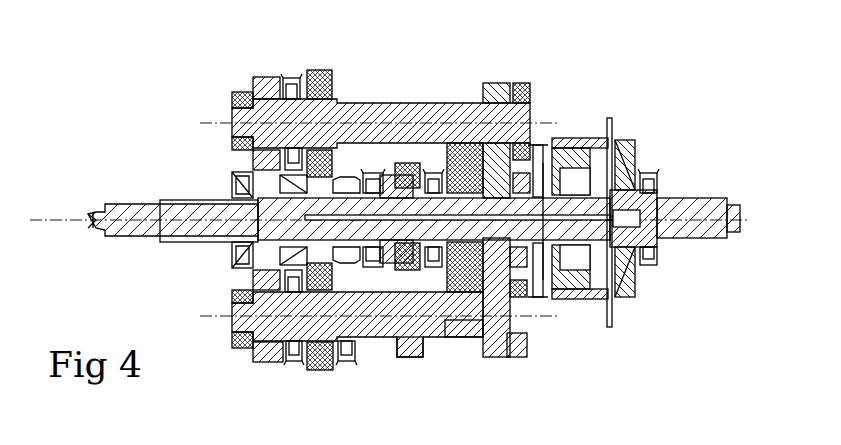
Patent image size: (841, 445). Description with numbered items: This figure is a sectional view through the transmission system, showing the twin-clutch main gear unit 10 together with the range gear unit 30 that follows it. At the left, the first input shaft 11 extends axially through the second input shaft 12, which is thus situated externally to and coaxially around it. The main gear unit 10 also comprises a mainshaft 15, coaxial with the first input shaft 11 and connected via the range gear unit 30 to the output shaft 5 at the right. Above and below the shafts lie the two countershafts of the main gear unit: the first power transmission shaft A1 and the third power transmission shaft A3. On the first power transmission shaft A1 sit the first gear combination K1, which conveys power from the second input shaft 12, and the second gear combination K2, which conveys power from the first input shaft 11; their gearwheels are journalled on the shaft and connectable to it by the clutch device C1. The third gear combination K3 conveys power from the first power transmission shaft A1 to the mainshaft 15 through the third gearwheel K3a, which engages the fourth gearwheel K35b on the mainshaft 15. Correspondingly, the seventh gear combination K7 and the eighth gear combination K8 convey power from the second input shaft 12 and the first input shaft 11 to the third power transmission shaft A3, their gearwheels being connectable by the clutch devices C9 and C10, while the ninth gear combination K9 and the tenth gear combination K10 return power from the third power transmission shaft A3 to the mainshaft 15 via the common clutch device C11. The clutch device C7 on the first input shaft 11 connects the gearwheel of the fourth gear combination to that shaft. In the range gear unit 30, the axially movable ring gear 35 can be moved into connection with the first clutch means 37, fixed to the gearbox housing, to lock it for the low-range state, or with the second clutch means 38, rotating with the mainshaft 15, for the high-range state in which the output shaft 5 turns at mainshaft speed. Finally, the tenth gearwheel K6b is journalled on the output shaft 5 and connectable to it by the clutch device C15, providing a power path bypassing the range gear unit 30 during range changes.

The output shaft 5 is at (698, 203).
The twin-clutch main gear unit 10 is at (553, 341).
The first input shaft 11 is at (140, 208).
The second input shaft 12 is at (190, 199).
The mainshaft 15 is at (455, 203).
The range gear unit 30 is at (591, 325).
The ring gear 35 is at (573, 138).
The first clutch means 37 is at (612, 118).
The second clutch means 38 is at (539, 143).
The first power transmission shaft A1 is at (400, 103).
The third power transmission shaft A3 is at (433, 337).
The first gear combination K1 is at (266, 74).
The second gear combination K2 is at (320, 68).
The third gear combination K3 is at (497, 81).
The third gearwheel K3a is at (509, 98).
The tenth gearwheel K6b is at (629, 139).
The seventh gear combination K7 is at (268, 366).
The eighth gear combination K8 is at (321, 374).
The ninth gear combination K9 is at (410, 364).
The tenth gear combination K10 is at (462, 347).
The fourth gearwheel K35b is at (497, 272).
The clutch device C1 is at (291, 75).
The clutch device C7 is at (373, 168).
The clutch device C9 is at (291, 374).
The clutch device C10 is at (349, 372).
The clutch device C11 is at (432, 170).
The clutch device C15 is at (657, 168).